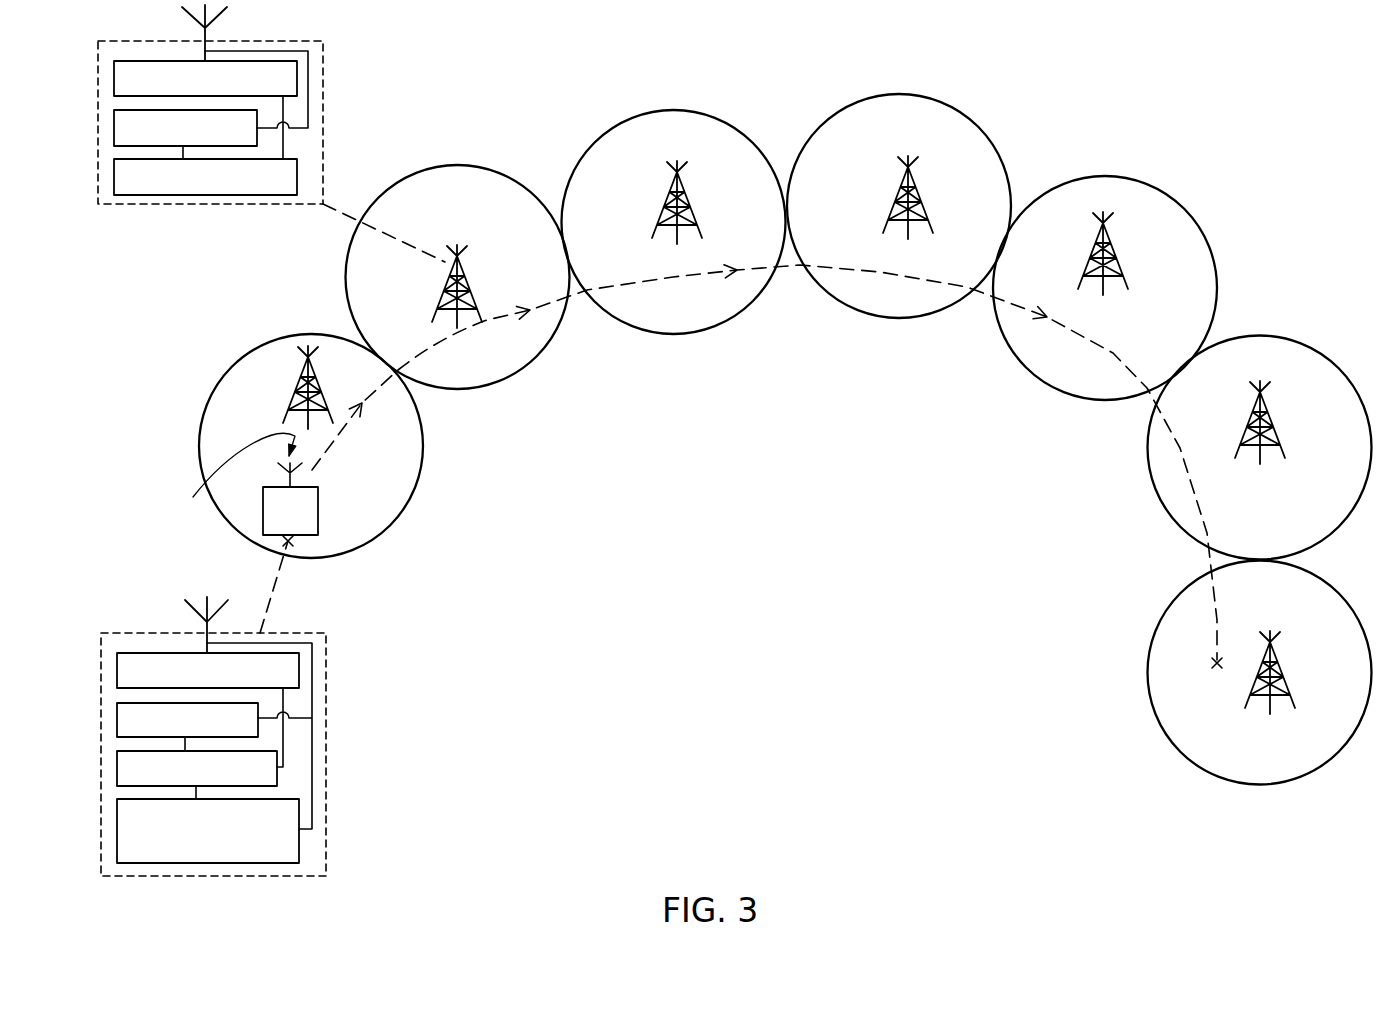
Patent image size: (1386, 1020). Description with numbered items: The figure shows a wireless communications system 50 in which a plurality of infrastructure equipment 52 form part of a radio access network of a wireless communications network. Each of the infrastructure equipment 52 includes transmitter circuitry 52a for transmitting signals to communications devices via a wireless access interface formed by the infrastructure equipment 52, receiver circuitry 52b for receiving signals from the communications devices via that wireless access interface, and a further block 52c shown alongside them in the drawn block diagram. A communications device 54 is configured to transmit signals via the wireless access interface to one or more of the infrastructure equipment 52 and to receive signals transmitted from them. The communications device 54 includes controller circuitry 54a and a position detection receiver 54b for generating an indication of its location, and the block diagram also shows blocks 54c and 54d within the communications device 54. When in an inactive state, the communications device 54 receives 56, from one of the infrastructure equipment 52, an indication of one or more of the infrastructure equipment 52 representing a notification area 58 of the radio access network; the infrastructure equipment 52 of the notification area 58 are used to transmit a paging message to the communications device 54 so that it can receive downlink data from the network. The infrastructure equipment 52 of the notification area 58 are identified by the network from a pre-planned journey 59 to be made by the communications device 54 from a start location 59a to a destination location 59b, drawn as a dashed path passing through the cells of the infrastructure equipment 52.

The wireless communications system 50 is at (1223, 138).
The infrastructure equipment 52 is at (724, 359).
The transmitter circuitry 52a is at (297, 78).
The receiver circuitry 52b is at (260, 135).
The base station controller 52c is at (210, 195).
The communications device 54 is at (251, 669).
The controller circuitry 54a is at (277, 777).
The position detection receiver 54b is at (299, 817).
The UE transmitter 54c is at (299, 670).
The UE receiver 54d is at (258, 725).
The receiving an indication 56 is at (226, 473).
The notification area 58 is at (400, 472).
The pre-planned journey 59 is at (575, 300).
The start location 59a is at (290, 545).
The destination location 59b is at (1215, 665).